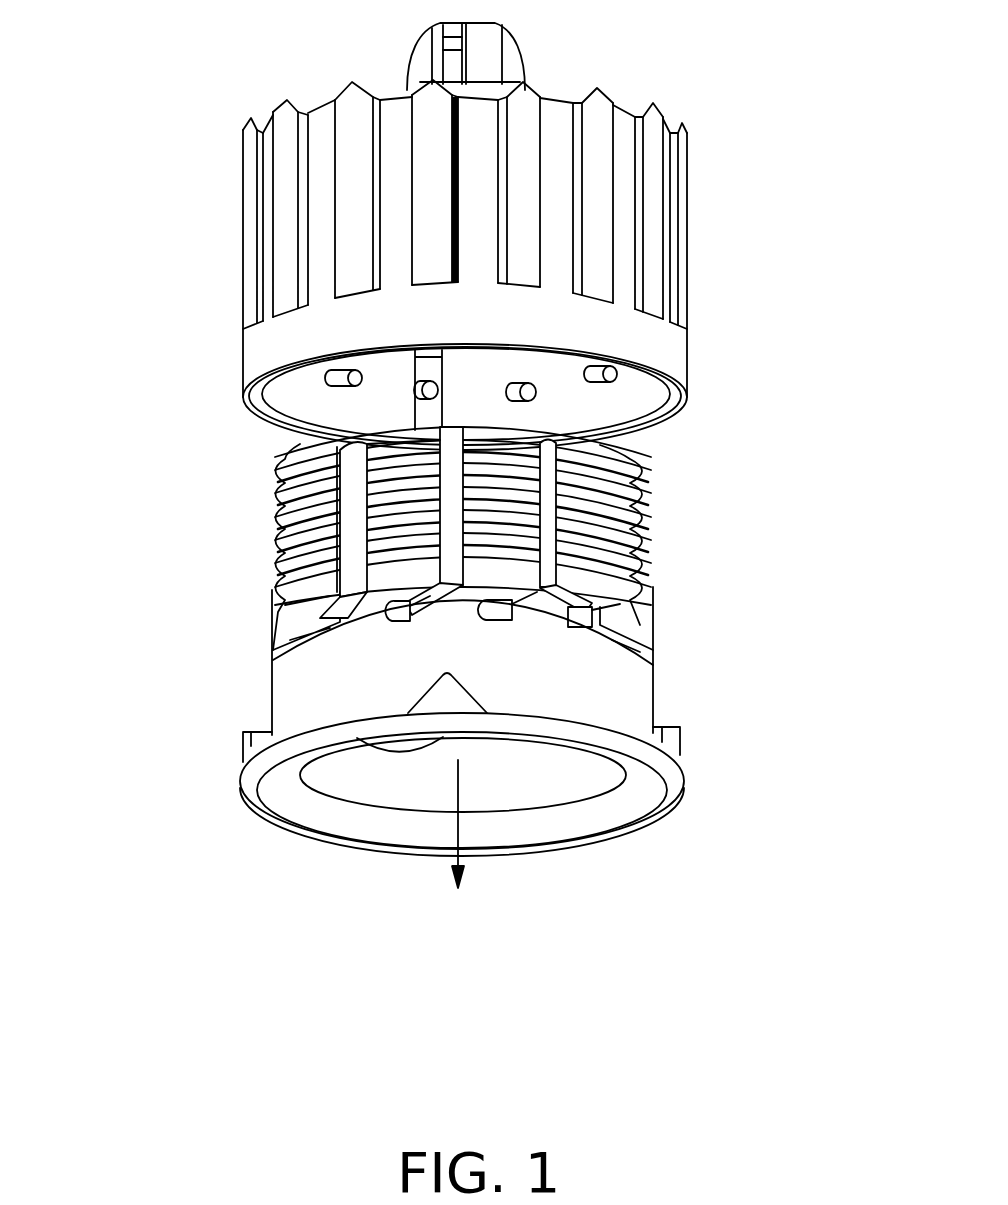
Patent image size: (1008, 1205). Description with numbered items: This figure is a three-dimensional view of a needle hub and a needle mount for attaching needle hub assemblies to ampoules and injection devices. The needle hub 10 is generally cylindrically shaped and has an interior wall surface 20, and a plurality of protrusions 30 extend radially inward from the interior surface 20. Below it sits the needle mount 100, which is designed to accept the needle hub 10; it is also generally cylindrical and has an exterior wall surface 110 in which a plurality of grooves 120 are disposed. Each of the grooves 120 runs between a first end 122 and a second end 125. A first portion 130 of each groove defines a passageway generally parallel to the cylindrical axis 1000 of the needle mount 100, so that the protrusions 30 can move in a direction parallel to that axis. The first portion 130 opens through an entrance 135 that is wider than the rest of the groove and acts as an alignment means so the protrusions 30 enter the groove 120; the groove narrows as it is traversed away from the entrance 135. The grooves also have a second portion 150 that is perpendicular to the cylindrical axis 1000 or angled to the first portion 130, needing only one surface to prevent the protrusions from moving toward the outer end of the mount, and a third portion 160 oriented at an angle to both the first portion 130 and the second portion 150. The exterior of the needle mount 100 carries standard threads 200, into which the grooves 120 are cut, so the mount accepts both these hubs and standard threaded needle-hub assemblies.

The needle hub 10 is at (637, 342).
The interior wall surface 20 is at (622, 417).
The protrusions 30 is at (507, 390).
The needle mount 100 is at (647, 820).
The exterior wall surface 110 is at (308, 705).
The grooves 120 is at (622, 605).
The first end 122 is at (545, 440).
The second end 125 is at (395, 628).
The first portion 130 is at (653, 523).
The entrance 135 is at (280, 493).
The second portion 150 is at (493, 628).
The third portion 160 is at (540, 607).
The standard threads 200 is at (273, 577).
The cylindrical axis 1000 is at (451, 841).